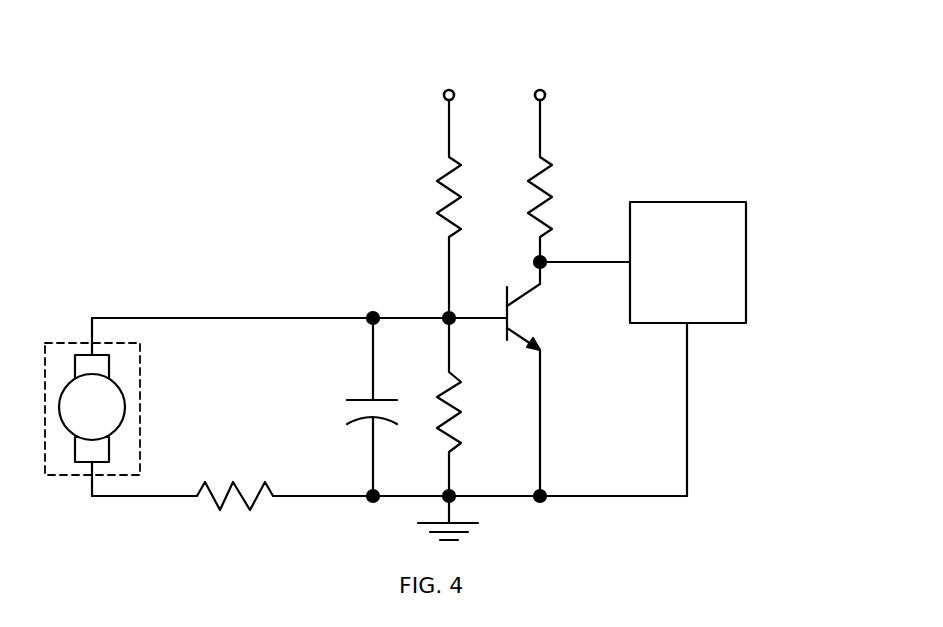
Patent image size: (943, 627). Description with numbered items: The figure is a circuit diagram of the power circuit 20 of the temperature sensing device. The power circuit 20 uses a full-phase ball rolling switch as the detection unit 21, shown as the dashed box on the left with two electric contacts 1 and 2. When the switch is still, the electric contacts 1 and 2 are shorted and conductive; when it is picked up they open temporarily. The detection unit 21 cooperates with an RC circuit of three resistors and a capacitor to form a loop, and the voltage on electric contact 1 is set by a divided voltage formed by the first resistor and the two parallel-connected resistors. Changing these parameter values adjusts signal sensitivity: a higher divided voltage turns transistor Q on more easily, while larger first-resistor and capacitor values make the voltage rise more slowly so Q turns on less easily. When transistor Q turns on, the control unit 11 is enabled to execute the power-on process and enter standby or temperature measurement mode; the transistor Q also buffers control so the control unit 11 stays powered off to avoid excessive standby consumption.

The power circuit 20 is at (622, 103).
The control unit 11 is at (740, 216).
The detection unit 21 is at (131, 409).
The electric contact 1 is at (77, 333).
The electric contact 2 is at (77, 484).